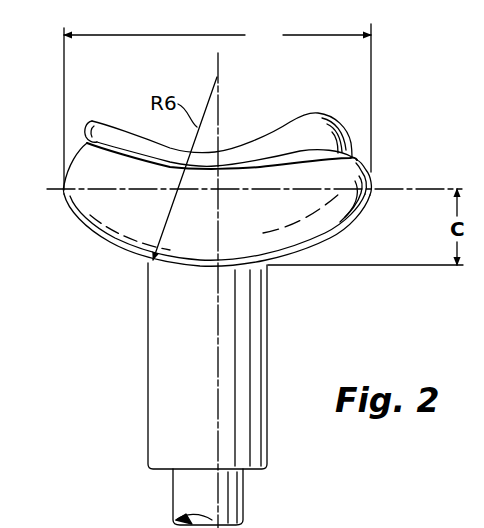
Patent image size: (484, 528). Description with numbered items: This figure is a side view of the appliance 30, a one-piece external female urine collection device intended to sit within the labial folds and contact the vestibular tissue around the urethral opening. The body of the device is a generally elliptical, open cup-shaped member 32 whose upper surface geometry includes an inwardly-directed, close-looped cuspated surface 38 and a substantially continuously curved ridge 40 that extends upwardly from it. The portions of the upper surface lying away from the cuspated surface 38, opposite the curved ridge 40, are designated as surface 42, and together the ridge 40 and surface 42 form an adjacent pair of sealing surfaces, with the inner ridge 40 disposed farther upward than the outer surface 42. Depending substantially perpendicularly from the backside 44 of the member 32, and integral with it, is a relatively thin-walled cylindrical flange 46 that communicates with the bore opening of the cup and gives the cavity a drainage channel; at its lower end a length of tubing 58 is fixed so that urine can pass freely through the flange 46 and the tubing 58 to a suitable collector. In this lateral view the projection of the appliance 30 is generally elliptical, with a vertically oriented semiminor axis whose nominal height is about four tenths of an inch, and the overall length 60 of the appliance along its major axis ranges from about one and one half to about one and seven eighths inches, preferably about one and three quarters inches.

The appliance 30 is at (393, 172).
The cup-shaped member 32 is at (65, 200).
The cuspated surface 38 is at (260, 167).
The curved ridge 40 is at (297, 130).
The surface 42 is at (356, 162).
The backside 44 is at (307, 250).
The cylindrical flange 46 is at (148, 316).
The tubing 58 is at (243, 497).
The length 60 is at (217, 106).